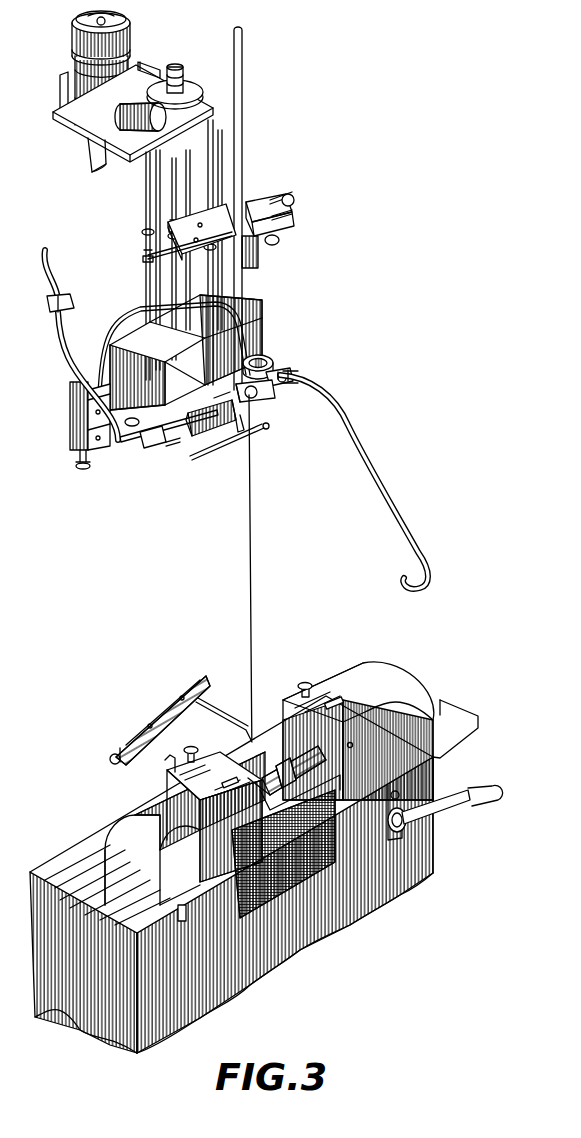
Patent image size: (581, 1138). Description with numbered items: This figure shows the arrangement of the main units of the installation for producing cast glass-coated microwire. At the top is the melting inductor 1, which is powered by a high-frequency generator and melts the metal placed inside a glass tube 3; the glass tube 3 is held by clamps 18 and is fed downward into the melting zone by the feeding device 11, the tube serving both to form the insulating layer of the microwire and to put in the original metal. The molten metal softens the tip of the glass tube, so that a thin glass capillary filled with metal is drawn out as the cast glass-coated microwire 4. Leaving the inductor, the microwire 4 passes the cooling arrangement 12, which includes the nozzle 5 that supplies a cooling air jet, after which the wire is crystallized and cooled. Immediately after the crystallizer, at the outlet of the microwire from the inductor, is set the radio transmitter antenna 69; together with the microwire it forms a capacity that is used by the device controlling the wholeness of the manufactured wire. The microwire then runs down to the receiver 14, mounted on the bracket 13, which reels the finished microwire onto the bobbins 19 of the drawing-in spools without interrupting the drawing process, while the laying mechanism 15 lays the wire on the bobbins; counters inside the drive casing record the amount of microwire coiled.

The melting inductor 1 is at (266, 356).
The glass tube 3 is at (243, 138).
The cast glass-coated microwire 4 is at (253, 508).
The nozzle 5 is at (270, 393).
The device for feeding of glass tube 11 is at (180, 214).
The arrangement for cooling of cast wire 12 is at (290, 366).
The bracket 13 is at (433, 870).
The receiver 14 is at (390, 675).
The laying mechanism 15 is at (150, 728).
The clamps 18 is at (288, 192).
The bobbins 19 is at (262, 765).
The radio transmitter antenna 69 is at (258, 432).